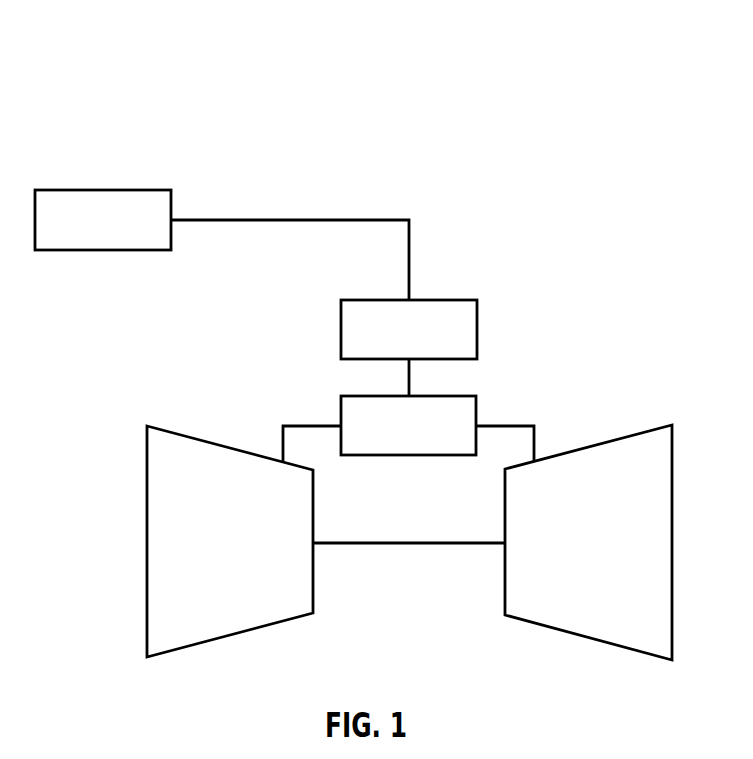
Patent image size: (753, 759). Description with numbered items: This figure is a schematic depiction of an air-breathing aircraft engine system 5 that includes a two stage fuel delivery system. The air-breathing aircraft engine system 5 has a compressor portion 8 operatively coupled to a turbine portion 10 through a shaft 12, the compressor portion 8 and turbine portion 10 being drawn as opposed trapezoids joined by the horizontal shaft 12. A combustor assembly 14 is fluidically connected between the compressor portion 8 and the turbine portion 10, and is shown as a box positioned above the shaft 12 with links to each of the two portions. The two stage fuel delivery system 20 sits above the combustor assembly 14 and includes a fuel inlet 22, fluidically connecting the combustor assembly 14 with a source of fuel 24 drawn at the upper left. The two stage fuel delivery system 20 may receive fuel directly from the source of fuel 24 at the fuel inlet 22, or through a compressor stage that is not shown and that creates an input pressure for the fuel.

The air-breathing aircraft engine system 5 is at (578, 60).
The compressor portion 8 is at (160, 518).
The turbine portion 10 is at (649, 446).
The shaft 12 is at (410, 545).
The combustor assembly 14 is at (468, 413).
The two stage fuel delivery system 20 is at (457, 310).
The fuel inlet 22 is at (371, 218).
The source of fuel 24 is at (92, 202).